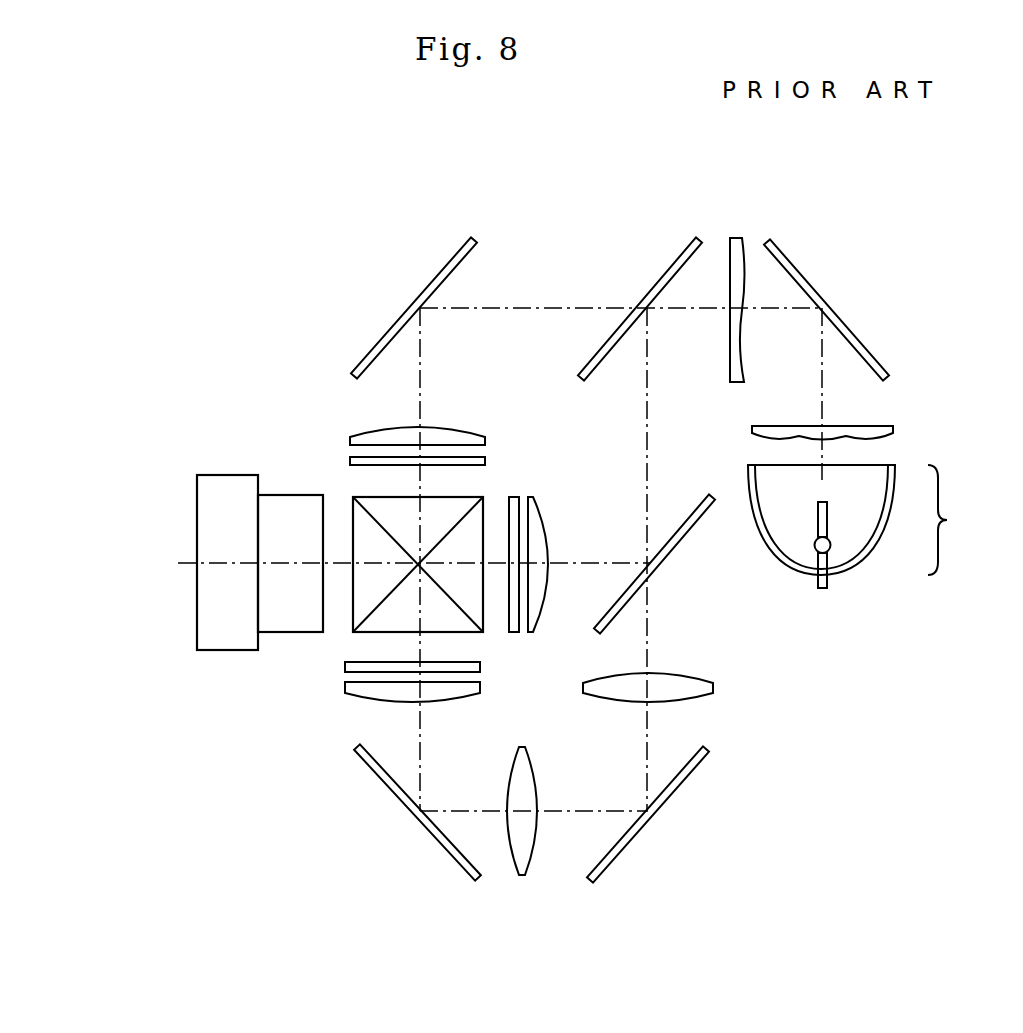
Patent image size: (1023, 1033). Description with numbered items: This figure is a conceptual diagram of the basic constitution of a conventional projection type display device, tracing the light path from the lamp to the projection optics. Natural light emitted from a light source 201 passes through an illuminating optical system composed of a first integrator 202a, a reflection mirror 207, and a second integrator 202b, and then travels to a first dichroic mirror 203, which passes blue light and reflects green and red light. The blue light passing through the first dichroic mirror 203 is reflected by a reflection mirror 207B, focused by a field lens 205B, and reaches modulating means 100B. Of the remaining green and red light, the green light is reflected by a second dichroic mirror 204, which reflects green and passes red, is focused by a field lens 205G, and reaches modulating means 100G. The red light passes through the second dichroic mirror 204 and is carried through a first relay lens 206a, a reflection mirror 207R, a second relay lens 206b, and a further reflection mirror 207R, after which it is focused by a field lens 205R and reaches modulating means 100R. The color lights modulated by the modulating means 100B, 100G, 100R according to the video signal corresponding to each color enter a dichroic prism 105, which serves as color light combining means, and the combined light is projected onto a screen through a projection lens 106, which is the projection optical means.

The projection lens 106 is at (195, 638).
The dichroic prism 105 is at (440, 617).
The modulating means 100B is at (353, 458).
The field lens 205B is at (385, 425).
The reflection mirror 207B is at (377, 343).
The modulating means 100R is at (345, 667).
The field lens 205R is at (357, 692).
The modulating means 100G is at (542, 473).
The field lens 205G is at (547, 603).
The first dichroic mirror 203 is at (653, 288).
The second dichroic mirror 204 is at (687, 533).
The second integrator 202b is at (733, 237).
The reflection mirror 207 is at (858, 335).
The first integrator 202a is at (877, 425).
The light source 201 is at (882, 526).
The first relay lens 206a is at (712, 690).
The second relay lens 206b is at (535, 850).
The reflection mirror 207R is at (425, 828).